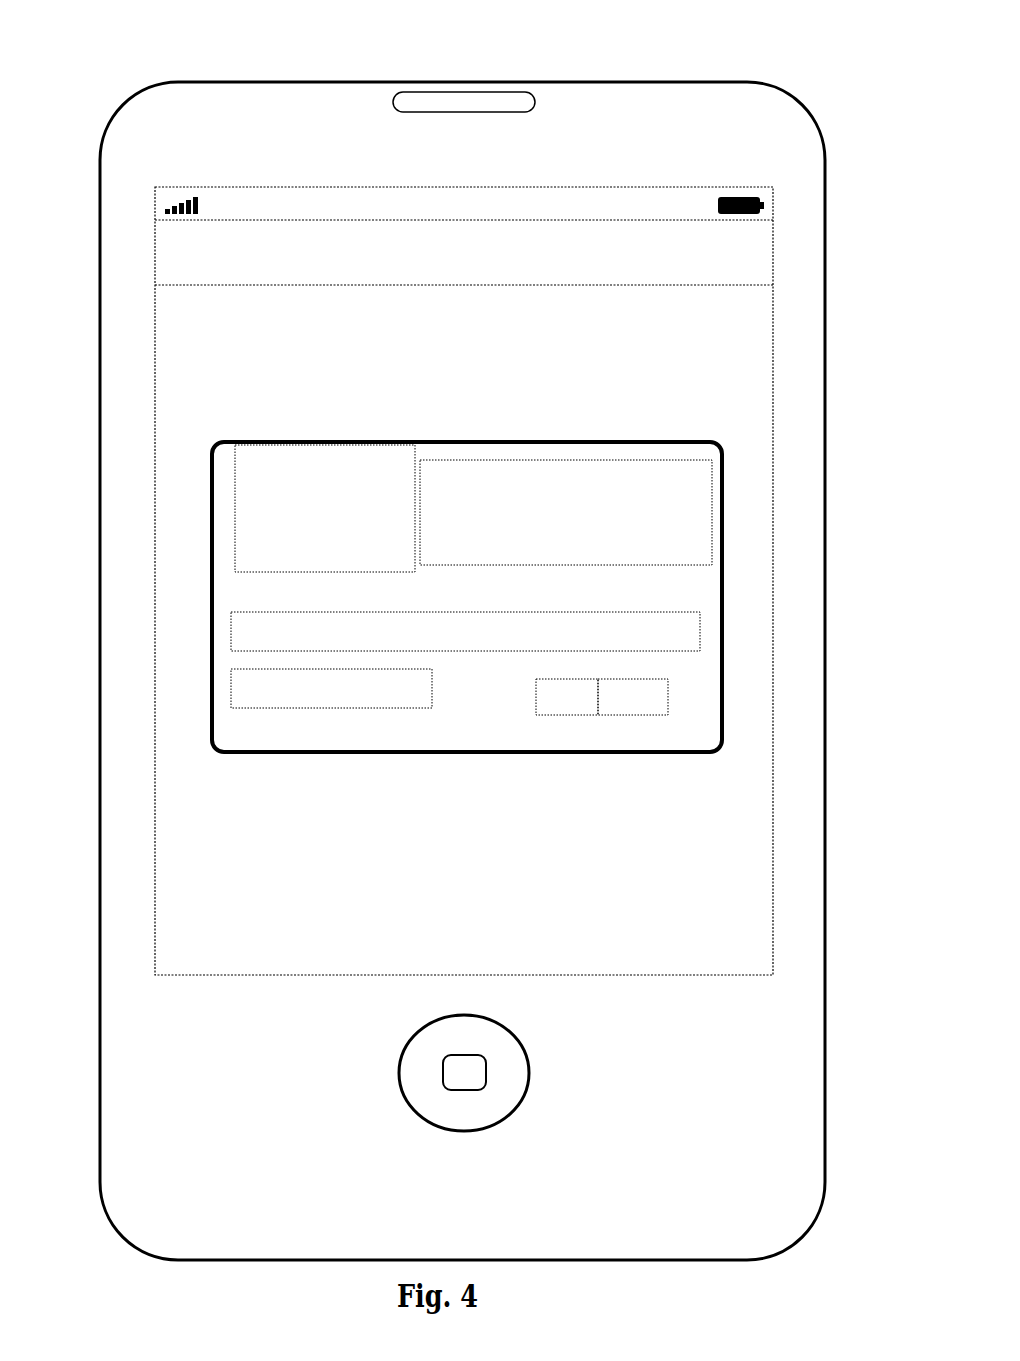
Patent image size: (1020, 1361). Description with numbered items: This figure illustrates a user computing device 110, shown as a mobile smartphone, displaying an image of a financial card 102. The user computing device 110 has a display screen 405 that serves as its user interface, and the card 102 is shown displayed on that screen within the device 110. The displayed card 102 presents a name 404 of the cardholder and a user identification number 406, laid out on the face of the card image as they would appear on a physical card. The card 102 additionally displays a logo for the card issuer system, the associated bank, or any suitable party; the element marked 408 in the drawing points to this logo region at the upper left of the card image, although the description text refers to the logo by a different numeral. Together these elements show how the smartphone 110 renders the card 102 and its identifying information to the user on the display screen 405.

The user computing device 110 is at (80, 33).
The display screen 405 is at (217, 962).
The financial card 102 is at (467, 608).
The bank logo 408 is at (358, 458).
The user identification number 406 is at (472, 655).
The name 404 is at (369, 715).